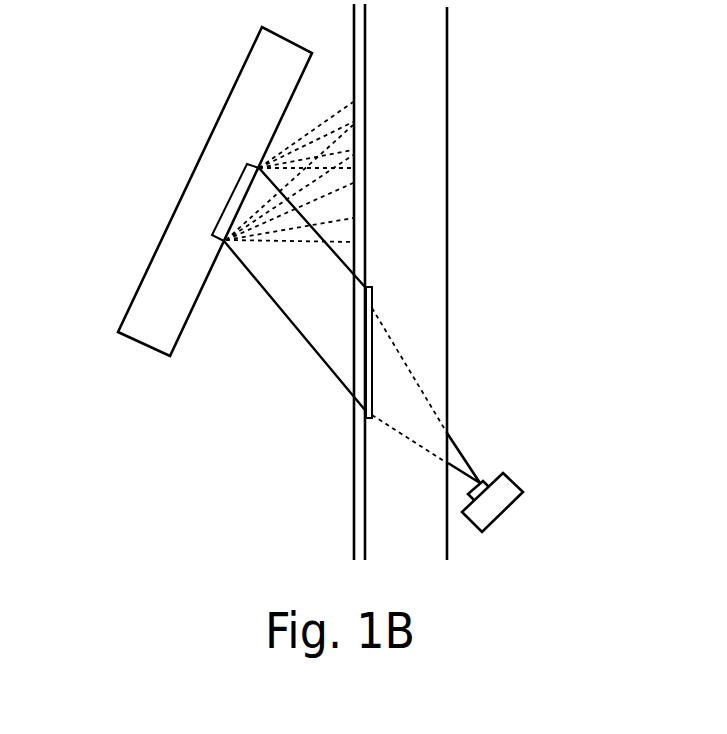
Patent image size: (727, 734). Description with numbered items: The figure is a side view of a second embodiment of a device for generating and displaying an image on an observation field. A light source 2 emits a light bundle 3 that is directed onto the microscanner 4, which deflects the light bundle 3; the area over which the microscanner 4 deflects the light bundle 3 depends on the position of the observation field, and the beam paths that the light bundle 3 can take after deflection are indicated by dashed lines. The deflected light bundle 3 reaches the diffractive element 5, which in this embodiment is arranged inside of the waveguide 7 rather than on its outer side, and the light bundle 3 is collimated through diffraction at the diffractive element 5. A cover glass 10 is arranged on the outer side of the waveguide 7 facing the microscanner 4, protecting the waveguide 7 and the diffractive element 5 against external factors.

The camera 2 is at (522, 487).
The light bundle 3 is at (458, 448).
The microscanner 4 is at (161, 240).
The diffractive element 5 is at (372, 358).
The waveguide 7 is at (448, 247).
The cover glass 10 is at (352, 465).